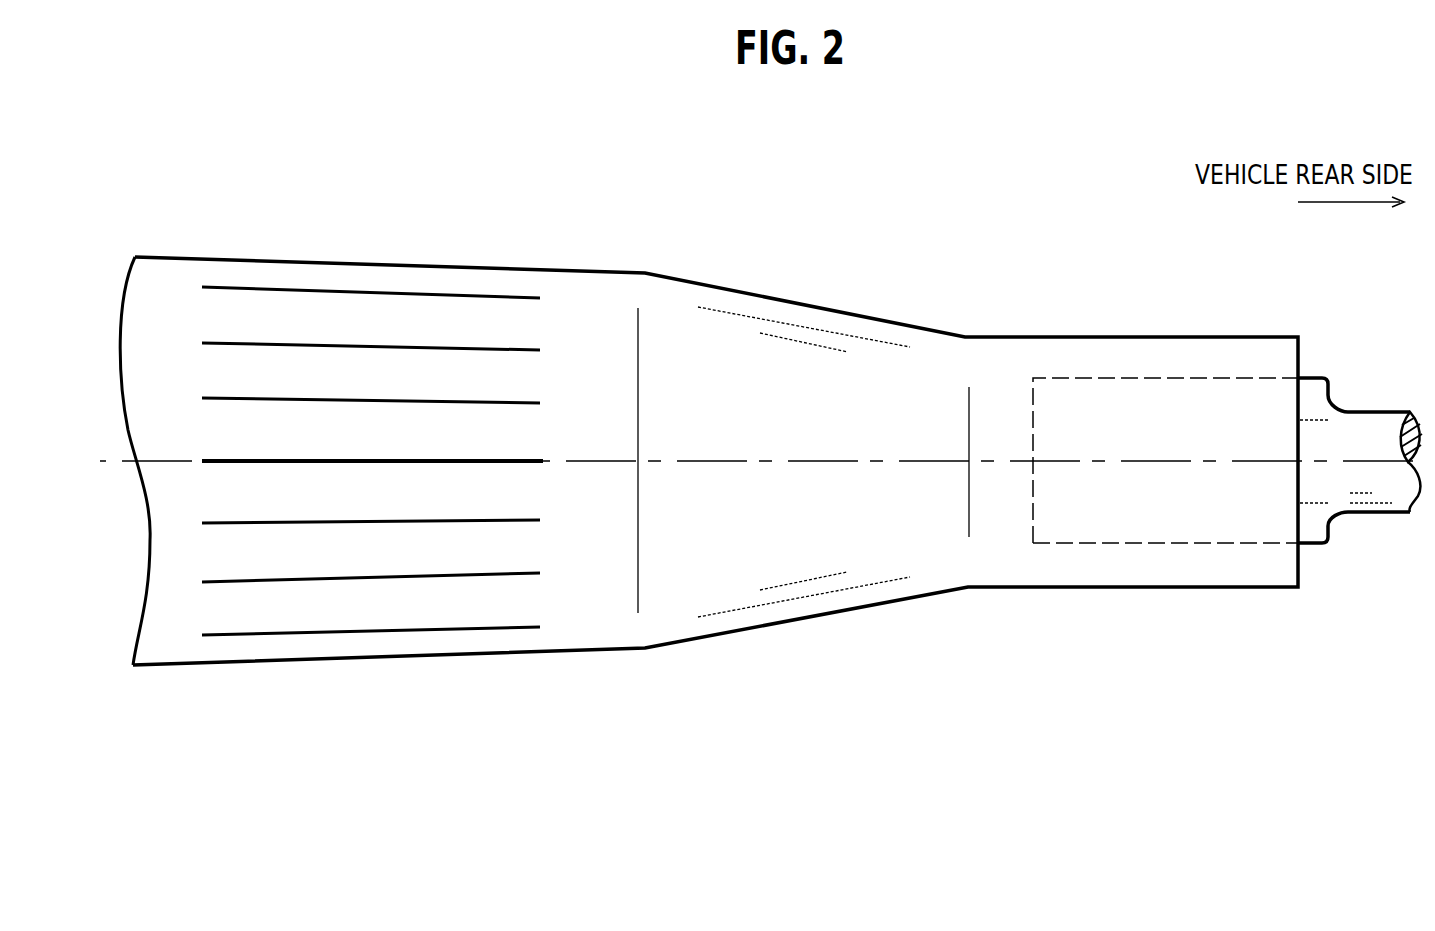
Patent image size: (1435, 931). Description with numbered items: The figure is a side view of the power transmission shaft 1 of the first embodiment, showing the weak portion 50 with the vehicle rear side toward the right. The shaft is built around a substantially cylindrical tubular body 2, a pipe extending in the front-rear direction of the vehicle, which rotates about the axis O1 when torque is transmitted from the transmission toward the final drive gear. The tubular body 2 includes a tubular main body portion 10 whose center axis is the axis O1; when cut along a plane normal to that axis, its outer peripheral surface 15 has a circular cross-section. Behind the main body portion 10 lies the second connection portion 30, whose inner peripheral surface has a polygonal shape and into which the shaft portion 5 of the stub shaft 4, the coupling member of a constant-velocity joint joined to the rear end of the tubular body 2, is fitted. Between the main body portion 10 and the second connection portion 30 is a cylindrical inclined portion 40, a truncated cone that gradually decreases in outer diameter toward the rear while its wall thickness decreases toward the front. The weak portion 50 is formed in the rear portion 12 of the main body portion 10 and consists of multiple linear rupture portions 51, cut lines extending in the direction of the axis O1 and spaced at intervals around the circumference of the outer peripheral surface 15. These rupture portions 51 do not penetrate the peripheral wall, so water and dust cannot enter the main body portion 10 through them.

The power transmission shaft 1 is at (771, 435).
The tubular body 2 is at (250, 248).
The main body portion 10 is at (344, 441).
The rear portion 12 is at (512, 268).
The outer peripheral surface 15 is at (575, 583).
The second connection portion 30 is at (1143, 563).
The inclined portion 40 is at (807, 537).
The shaft portion 5 is at (1220, 515).
The stub shaft 4 is at (1375, 490).
The weak portion 50 is at (372, 441).
The rupture portions 51 is at (390, 398).
The axis O1 is at (827, 461).